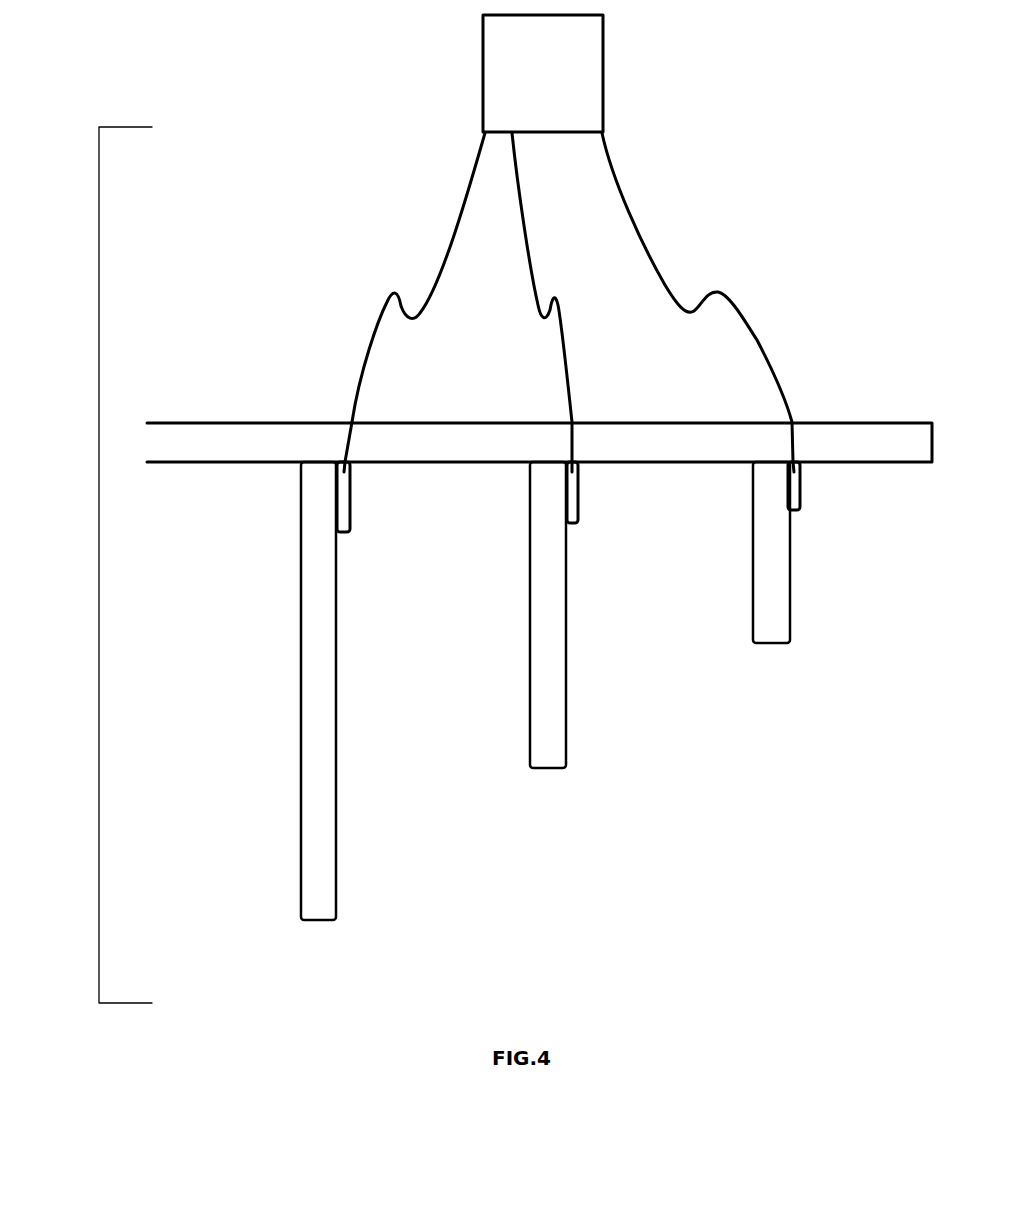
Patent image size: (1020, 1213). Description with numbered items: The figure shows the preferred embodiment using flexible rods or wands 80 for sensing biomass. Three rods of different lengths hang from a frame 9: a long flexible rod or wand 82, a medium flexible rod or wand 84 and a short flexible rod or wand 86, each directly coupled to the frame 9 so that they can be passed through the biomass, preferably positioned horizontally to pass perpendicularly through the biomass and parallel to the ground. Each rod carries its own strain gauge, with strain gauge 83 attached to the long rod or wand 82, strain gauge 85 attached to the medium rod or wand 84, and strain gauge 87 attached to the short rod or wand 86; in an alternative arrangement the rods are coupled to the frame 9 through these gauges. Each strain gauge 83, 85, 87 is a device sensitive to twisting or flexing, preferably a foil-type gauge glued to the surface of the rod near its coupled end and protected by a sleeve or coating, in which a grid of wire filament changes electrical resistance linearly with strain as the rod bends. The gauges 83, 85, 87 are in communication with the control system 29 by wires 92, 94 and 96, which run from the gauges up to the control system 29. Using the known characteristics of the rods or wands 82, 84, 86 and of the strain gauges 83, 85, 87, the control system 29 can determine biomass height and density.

The control system 29 is at (543, 73).
The flexible rods or wands 80 is at (99, 510).
The frame 9 is at (235, 421).
The wire 92 is at (393, 292).
The wire 94 is at (538, 288).
The wire 96 is at (709, 292).
The long flexible rod or wand 82 is at (320, 668).
The strain gauge 83 is at (350, 500).
The medium flexible rod or wand 84 is at (550, 680).
The strain gauge 85 is at (574, 488).
The short flexible rod or wand 86 is at (773, 626).
The strain gauge 87 is at (797, 486).